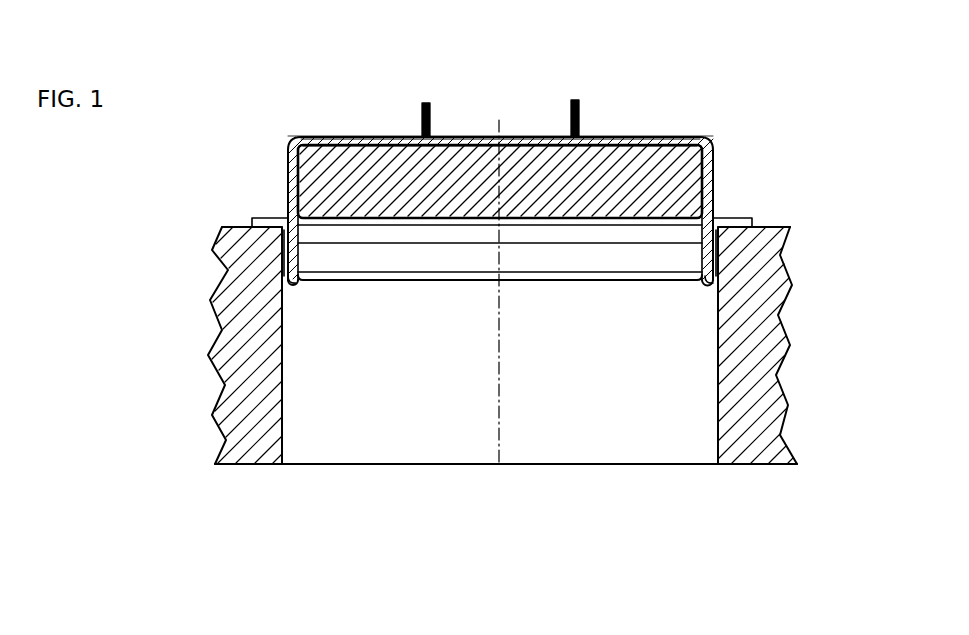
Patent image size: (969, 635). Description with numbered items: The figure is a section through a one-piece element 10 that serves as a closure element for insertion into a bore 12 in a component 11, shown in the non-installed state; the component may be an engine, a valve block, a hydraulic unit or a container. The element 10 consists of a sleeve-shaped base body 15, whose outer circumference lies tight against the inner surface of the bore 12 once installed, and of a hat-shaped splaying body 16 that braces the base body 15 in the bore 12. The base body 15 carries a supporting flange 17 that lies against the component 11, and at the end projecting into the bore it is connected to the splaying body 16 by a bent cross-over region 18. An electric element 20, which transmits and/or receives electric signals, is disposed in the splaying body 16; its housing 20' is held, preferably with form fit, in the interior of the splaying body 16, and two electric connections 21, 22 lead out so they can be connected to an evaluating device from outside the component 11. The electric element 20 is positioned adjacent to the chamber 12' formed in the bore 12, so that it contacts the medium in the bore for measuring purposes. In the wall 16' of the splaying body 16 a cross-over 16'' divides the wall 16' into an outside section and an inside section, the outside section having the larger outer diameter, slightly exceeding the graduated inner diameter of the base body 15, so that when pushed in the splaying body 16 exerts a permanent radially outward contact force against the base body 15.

The element 10 is at (508, 126).
The component 11 is at (252, 343).
The bore 12 is at (506, 501).
The chamber 12' is at (500, 463).
The sleeve-shaped base body 15 is at (713, 268).
The splaying body 16 is at (489, 169).
The wall 16' is at (567, 130).
The cross-over 16'' is at (584, 232).
The supporting flange 17 is at (262, 218).
The bent cross-over region 18 is at (292, 285).
The electric element 20 is at (587, 212).
The housing 20' is at (500, 83).
The electric connection 21 is at (422, 120).
The electric connection 22 is at (580, 100).